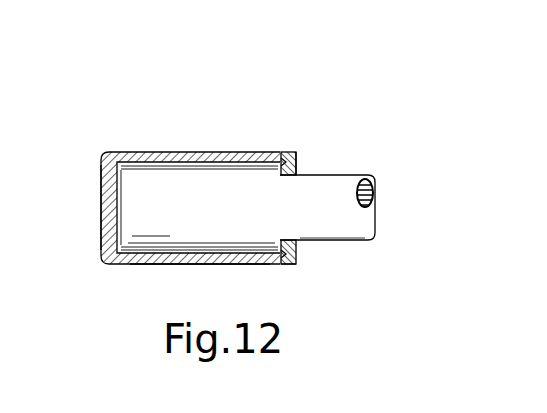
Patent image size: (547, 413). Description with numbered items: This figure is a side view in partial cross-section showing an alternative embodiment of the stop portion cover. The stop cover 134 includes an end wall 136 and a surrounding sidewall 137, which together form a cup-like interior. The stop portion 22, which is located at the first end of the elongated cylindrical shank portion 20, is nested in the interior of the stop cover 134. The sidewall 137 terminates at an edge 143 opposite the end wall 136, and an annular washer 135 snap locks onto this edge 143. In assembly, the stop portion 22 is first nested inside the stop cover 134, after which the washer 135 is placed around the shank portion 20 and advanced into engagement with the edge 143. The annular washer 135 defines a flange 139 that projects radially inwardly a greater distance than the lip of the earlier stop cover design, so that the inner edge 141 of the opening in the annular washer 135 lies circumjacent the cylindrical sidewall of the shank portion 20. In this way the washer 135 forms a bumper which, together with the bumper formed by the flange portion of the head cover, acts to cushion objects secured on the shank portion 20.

The stop cover 134 is at (190, 139).
The stop portion 22 is at (209, 210).
The end wall 136 is at (101, 207).
The sidewall 137 is at (192, 265).
The edge 143 is at (278, 152).
The inner edge 141 is at (296, 162).
The flange 139 is at (295, 262).
The annular washer 135 is at (291, 267).
The shank portion 20 is at (330, 193).